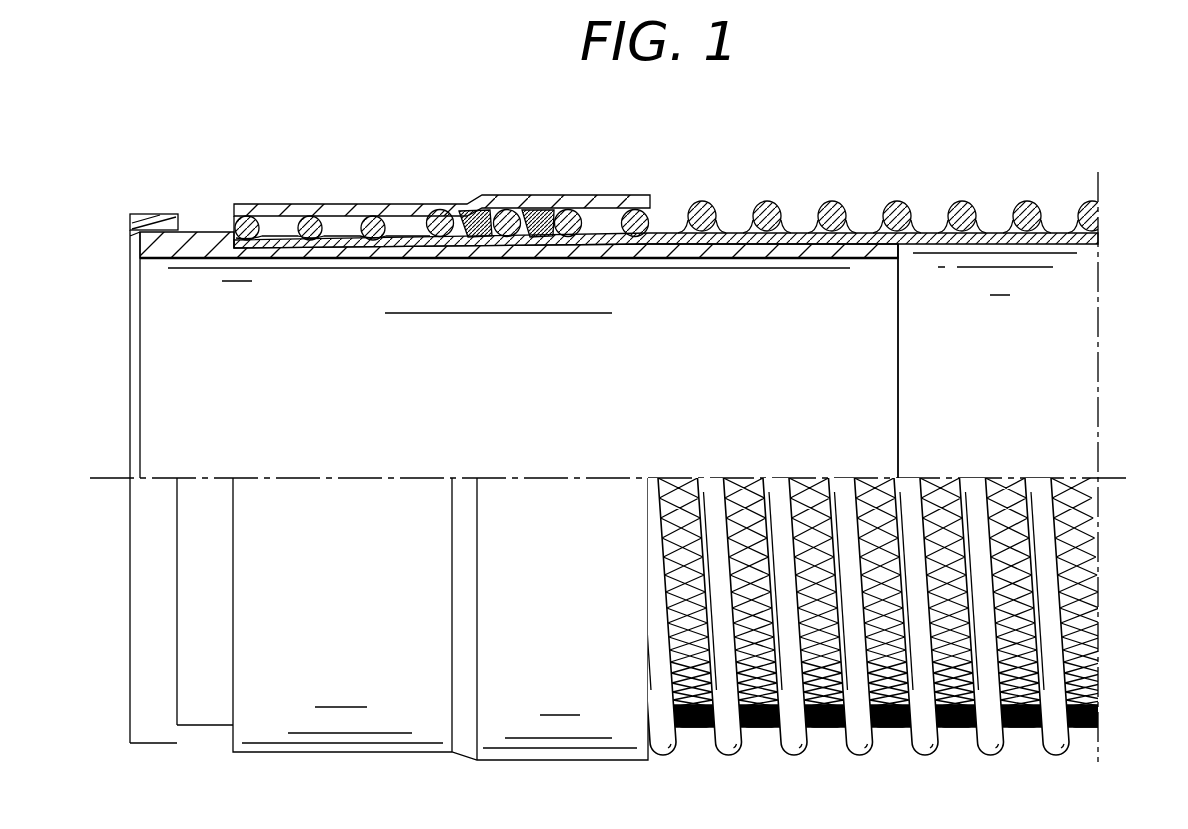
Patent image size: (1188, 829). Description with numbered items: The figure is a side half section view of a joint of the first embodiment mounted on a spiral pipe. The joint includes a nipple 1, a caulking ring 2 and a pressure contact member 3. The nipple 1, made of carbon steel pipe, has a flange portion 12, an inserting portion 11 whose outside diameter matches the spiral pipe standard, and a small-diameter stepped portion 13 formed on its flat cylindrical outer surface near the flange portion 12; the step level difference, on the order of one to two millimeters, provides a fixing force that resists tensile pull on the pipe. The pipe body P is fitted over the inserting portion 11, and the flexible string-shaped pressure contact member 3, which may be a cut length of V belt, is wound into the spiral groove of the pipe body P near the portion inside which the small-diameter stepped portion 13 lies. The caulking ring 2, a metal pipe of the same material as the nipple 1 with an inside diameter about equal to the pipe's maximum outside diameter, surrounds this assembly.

The nipple 1 is at (128, 694).
The caulking ring 2 is at (507, 762).
The pressure contact member 3 is at (533, 208).
The inserting portion 11 is at (882, 248).
The flange portion 12 is at (152, 212).
The small-diameter stepped portion 13 is at (340, 240).
The pipe body P is at (1100, 590).